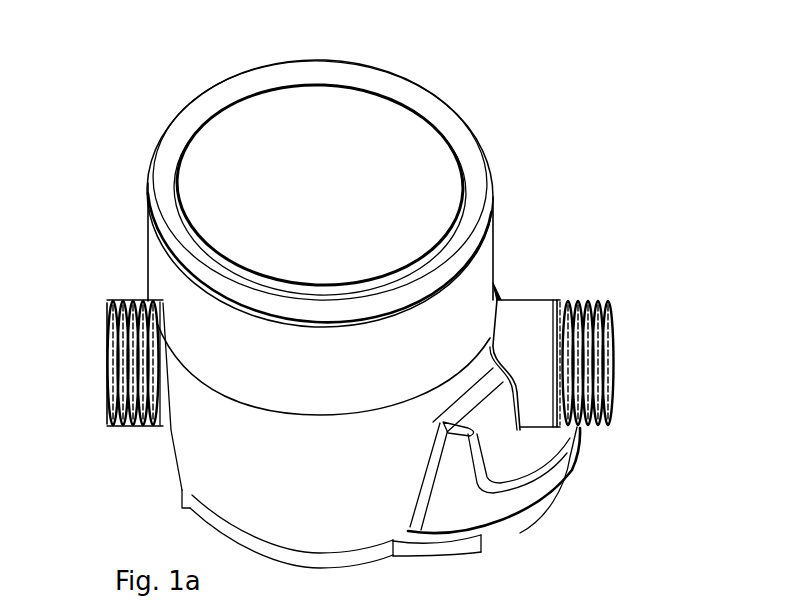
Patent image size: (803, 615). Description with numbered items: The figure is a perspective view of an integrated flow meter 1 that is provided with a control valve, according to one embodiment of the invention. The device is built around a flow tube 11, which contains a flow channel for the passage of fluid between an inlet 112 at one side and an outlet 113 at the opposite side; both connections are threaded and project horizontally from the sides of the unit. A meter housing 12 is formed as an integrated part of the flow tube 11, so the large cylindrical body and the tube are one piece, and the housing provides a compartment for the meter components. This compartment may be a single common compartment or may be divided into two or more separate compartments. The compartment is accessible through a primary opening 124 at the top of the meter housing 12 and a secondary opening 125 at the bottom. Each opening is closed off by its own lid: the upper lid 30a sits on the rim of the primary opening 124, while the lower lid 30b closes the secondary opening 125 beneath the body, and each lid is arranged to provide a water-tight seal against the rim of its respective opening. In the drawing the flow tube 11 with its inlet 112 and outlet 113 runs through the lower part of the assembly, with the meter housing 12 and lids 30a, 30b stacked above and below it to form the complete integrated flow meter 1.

The integrated flow meter 1 is at (557, 68).
The lid 30a is at (472, 172).
The meter housing 12 is at (475, 281).
The primary opening 124 is at (148, 236).
The inlet 112 is at (107, 362).
The outlet 113 is at (613, 360).
The flow tube 11 is at (533, 412).
The lid 30b is at (537, 521).
The secondary opening 125 is at (483, 533).